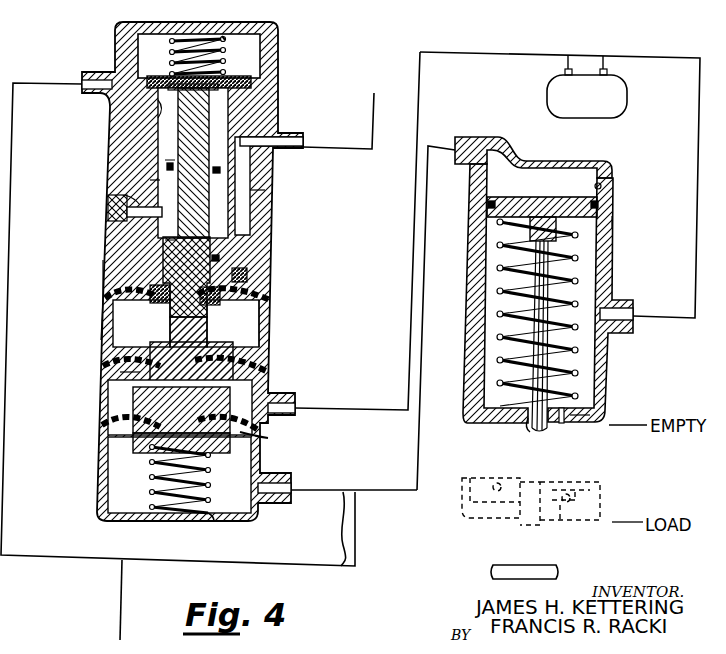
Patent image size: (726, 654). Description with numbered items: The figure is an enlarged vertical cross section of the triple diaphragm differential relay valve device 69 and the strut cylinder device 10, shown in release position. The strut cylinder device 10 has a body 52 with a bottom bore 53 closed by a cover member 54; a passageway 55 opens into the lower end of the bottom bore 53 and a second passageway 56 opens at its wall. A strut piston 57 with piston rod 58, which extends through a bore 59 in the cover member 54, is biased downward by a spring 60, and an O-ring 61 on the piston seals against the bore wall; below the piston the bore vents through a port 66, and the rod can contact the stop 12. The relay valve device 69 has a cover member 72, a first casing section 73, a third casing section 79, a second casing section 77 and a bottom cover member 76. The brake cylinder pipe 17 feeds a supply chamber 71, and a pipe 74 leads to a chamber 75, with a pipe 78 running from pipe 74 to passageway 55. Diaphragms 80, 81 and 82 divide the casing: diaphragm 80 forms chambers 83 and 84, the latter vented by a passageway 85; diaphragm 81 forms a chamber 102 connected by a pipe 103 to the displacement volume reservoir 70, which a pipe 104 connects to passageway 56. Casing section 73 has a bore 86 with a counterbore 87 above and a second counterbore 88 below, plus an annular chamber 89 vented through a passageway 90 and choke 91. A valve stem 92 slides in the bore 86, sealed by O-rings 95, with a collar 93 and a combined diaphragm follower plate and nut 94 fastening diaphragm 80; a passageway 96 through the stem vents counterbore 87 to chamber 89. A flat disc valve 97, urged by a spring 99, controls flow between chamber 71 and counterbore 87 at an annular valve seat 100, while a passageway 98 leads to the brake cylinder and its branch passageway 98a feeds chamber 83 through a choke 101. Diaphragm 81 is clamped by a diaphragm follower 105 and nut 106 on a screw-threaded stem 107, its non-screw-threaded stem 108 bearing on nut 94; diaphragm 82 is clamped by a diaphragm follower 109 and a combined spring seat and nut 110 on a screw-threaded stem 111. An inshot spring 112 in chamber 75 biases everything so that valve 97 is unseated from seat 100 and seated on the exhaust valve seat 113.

The strut cylinder device 10 is at (614, 222).
The stop 12 is at (492, 566).
The brake cylinder pipe 17 is at (82, 92).
The body 52 is at (603, 247).
The bottom bore 53 is at (601, 186).
The cover member 54 is at (597, 423).
The passageway 55 is at (477, 148).
The second passageway 56 is at (618, 312).
The strut piston 57 is at (586, 205).
The piston rod 58 is at (539, 432).
The bore 59 is at (528, 422).
The spring 60 is at (500, 243).
The O-ring 61 is at (487, 204).
The port 66 is at (562, 423).
The relay valve device 69 is at (101, 244).
The displacement volume reservoir 70 is at (592, 107).
The supply chamber 71 is at (145, 55).
The cover member 72 is at (125, 30).
The first casing section 73 is at (130, 150).
The pipe 74 is at (341, 529).
The chamber 75 is at (120, 468).
The bottom cover member 76 is at (110, 483).
The second casing section 77 is at (130, 425).
The pipe 78 is at (417, 489).
The third casing section 79 is at (108, 313).
The diaphragm 80 is at (127, 293).
The diaphragm 81 is at (130, 360).
The diaphragm 82 is at (125, 433).
The chamber 83 is at (245, 293).
The chamber 84 is at (245, 318).
The passageway 85 is at (259, 330).
The bore 86 is at (168, 162).
The counterbore 87 is at (178, 131).
The second counterbore 88 is at (163, 262).
The annular chamber 89 is at (160, 180).
The passageway 90 is at (130, 200).
The choke 91 is at (118, 218).
The valve stem 92 is at (230, 101).
The collar 93 is at (240, 268).
The combined diaphragm follower plate and nut 94 is at (165, 300).
The O-ring 95 is at (220, 171).
The passageway 96 is at (209, 127).
The flat disc valve 97 is at (240, 74).
The passageway 98 is at (285, 133).
The branch passageway 98a is at (250, 197).
The spring 99 is at (228, 40).
The annular valve seat 100 is at (158, 117).
The choke 101 is at (247, 278).
The chamber 102 is at (120, 390).
The pipe 103 is at (295, 402).
The pipe 104 is at (697, 134).
The diaphragm follower 105 is at (210, 360).
The nut 106 is at (240, 380).
The screw-threaded stem 107 is at (145, 372).
The non-screw-threaded stem 108 is at (180, 325).
The diaphragm follower 109 is at (150, 405).
The combined spring seat and nut 110 is at (150, 450).
The screw-threaded stem 111 is at (258, 440).
The inshot spring 112 is at (216, 522).
The exhaust valve seat 113 is at (218, 90).